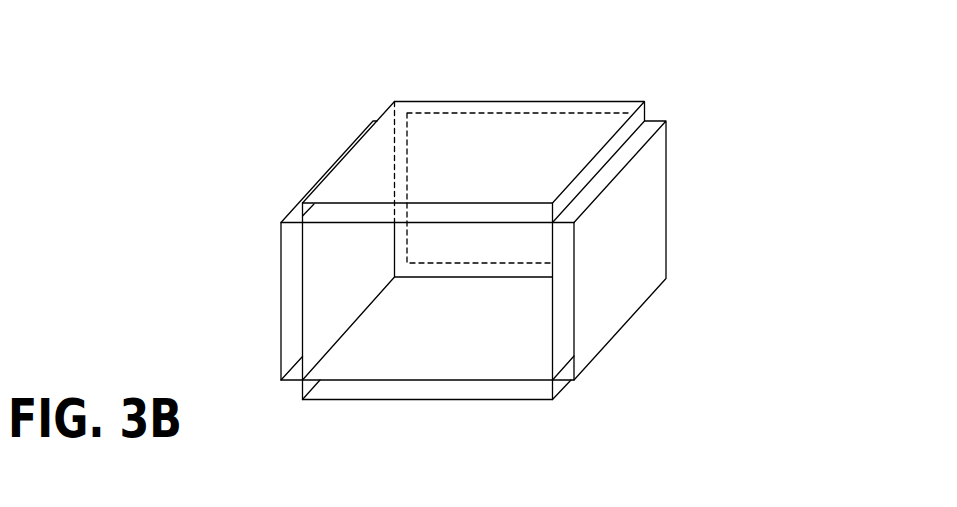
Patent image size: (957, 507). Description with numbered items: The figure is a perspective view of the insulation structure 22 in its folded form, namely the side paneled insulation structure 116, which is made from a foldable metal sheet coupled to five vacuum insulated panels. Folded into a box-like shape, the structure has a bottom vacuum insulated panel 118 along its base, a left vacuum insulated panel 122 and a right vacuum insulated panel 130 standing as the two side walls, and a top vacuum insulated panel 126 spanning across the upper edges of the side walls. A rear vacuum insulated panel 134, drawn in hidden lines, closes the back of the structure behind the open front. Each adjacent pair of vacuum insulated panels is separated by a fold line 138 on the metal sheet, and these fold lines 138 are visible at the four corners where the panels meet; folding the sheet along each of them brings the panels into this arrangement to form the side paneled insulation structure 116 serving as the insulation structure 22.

The insulation structure 22 is at (498, 245).
The side paneled insulation structure 116 is at (662, 95).
The bottom vacuum insulated panel 118 is at (407, 387).
The left vacuum insulated panel 122 is at (294, 289).
The top vacuum insulated panel 126 is at (485, 176).
The right vacuum insulated panel 130 is at (625, 269).
The rear vacuum insulated panel 134 is at (582, 140).
The fold line 138 is at (308, 212).